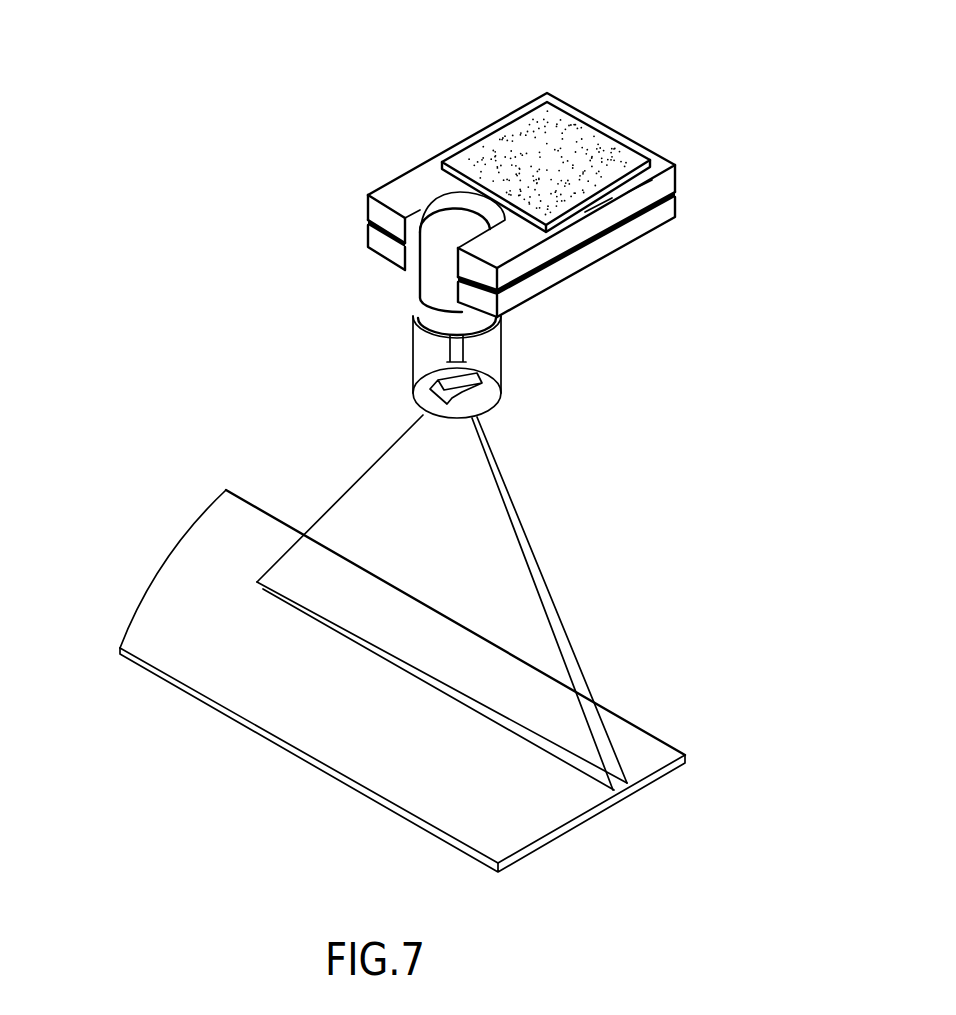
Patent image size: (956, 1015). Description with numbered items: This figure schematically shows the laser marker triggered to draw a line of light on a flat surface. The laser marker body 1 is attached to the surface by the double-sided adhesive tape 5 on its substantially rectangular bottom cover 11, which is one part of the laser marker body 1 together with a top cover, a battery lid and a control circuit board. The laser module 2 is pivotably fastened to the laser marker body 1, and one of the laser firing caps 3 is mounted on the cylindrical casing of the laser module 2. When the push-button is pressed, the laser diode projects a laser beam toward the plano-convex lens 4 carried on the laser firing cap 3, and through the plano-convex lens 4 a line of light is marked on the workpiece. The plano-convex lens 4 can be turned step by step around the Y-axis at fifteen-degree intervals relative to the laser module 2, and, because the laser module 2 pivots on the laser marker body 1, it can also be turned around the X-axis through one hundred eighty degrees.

The laser marker body 1 is at (650, 237).
The bottom cover 11 is at (668, 180).
The laser module 2 is at (428, 282).
The laser firing caps 3 is at (413, 372).
The plano-convex lens 4 is at (468, 390).
The double-sided adhesive tape 5 is at (518, 130).